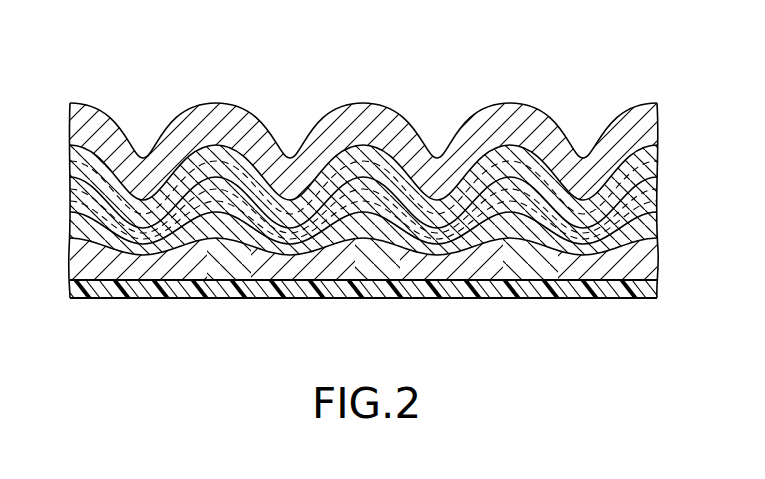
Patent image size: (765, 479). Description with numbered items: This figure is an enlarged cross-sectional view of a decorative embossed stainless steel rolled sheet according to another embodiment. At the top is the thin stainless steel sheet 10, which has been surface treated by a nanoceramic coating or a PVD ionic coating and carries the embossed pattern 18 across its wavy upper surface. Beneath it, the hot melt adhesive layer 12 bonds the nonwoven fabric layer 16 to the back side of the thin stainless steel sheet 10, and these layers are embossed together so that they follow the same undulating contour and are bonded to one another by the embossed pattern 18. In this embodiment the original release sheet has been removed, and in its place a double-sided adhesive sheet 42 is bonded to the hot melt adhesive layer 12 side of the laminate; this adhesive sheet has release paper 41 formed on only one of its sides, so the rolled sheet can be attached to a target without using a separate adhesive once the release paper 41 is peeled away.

The thin stainless steel sheet 10 is at (627, 107).
The hot melt adhesive layer 12 is at (638, 165).
The nonwoven fabric layer 16 is at (632, 203).
The embossed pattern 18 is at (325, 106).
The release paper 41 is at (607, 294).
The double-sided adhesive sheet 42 is at (643, 258).